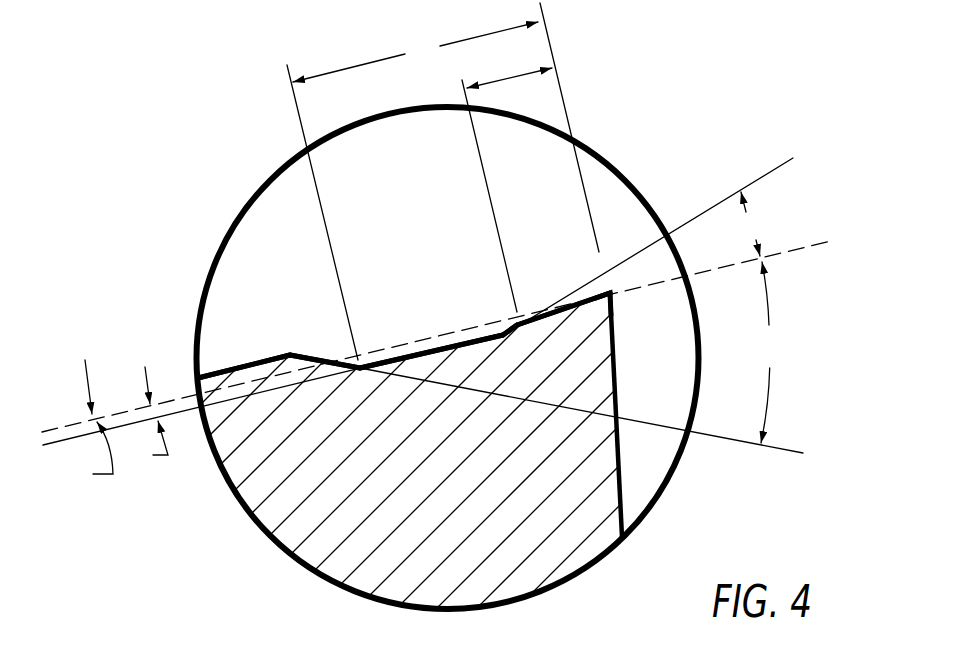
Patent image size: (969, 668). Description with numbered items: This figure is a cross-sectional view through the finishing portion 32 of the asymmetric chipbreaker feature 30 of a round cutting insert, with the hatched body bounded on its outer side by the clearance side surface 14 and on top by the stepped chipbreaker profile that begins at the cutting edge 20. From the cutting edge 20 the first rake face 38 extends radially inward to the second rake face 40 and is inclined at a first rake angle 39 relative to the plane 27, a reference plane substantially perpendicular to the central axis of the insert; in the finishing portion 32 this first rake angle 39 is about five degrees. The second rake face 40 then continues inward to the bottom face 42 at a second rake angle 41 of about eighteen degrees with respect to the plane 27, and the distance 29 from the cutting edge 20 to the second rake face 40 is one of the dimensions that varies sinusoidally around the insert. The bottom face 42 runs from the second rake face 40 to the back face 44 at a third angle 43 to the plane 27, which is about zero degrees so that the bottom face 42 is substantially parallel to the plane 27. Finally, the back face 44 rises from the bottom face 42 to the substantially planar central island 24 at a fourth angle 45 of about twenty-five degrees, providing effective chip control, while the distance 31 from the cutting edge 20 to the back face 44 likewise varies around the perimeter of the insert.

The clearance side surface 14 is at (630, 470).
The cutting edge 20 is at (611, 294).
The central island 24 is at (237, 365).
The plane 27 is at (790, 257).
The distance from the cutting edge to the second rake face 29 is at (527, 72).
The asymmetric chipbreaker feature 30 is at (214, 223).
The distance from the cutting edge to the back face 31 is at (443, 181).
The finishing portion 32 is at (279, 226).
The first rake face 38 is at (558, 306).
The first rake angle 39 is at (147, 417).
The second rake face 40 is at (508, 330).
The second rake angle 41 is at (649, 246).
The bottom face 42 is at (421, 355).
The third angle 43 is at (90, 423).
The back face 44 is at (307, 357).
The fourth angle 45 is at (579, 357).